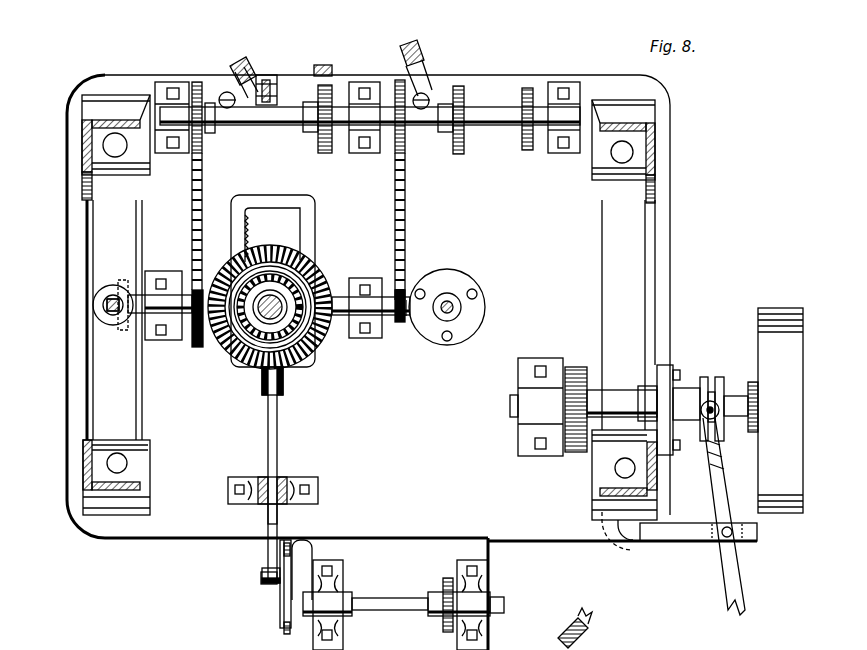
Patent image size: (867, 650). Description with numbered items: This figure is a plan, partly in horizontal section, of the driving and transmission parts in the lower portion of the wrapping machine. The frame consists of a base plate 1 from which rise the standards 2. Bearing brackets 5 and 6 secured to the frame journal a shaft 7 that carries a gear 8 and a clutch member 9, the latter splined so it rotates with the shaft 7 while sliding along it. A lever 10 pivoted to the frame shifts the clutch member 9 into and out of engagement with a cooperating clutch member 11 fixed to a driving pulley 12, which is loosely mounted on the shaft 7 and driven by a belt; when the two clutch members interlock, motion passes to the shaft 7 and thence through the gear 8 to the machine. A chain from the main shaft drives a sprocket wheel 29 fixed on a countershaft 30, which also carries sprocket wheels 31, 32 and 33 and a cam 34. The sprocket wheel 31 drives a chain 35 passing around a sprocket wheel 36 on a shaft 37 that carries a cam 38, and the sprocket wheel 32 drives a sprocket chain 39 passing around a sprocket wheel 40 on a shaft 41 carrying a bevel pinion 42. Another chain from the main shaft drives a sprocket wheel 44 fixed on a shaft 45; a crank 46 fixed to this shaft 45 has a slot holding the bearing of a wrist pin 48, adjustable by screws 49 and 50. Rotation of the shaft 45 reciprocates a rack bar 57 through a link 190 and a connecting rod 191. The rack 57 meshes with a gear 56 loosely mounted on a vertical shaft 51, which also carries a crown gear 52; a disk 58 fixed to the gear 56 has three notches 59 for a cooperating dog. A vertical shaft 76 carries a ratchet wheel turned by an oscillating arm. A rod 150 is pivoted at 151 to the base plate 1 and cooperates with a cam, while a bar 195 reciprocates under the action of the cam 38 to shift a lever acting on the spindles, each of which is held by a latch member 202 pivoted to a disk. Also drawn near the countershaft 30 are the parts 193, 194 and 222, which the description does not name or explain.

The base plate 1 is at (412, 362).
The standards 2 is at (82, 145).
The bearing bracket 5 is at (524, 405).
The bearing bracket 6 is at (665, 400).
The shaft 7 is at (612, 410).
The gear 8 is at (577, 367).
The clutch member 9 is at (713, 380).
The lever 10 is at (738, 584).
The clutch member 11 is at (750, 390).
The driving pulley 12 is at (772, 308).
The sprocket wheel 29 is at (458, 86).
The countershaft 30 is at (491, 108).
The sprocket wheel 31 is at (195, 85).
The sprocket wheel 32 is at (397, 80).
The sprocket wheel 33 is at (528, 88).
The cam 34 is at (325, 150).
The chain 35 is at (202, 160).
The sprocket wheel 36 is at (196, 345).
The shaft 37 is at (200, 292).
The cam 38 is at (121, 282).
The sprocket chain 39 is at (405, 212).
The sprocket wheel 40 is at (397, 325).
The shaft 41 is at (420, 325).
The bevel pinion 42 is at (338, 298).
The sprocket wheel 44 is at (446, 580).
The shaft 45 is at (385, 600).
The crank 46 is at (282, 600).
The wrist pin 48 is at (262, 585).
The screw 49 is at (290, 552).
The screw 50 is at (284, 630).
The shaft 51 is at (262, 320).
The crown gear 52 is at (320, 325).
The gear 56 is at (295, 375).
The rack 57 is at (248, 225).
The disk 58 is at (300, 270).
The notches 59 is at (275, 275).
The shaft 76 is at (449, 299).
The rod 150 is at (424, 55).
The pivot 151 is at (428, 95).
The link 190 is at (270, 553).
The connecting rod 191 is at (277, 435).
The bolt 193 is at (233, 60).
The bolt eye 194 is at (222, 95).
The bar 195 is at (113, 312).
The latch member 202 is at (590, 626).
The screw 222 is at (267, 75).